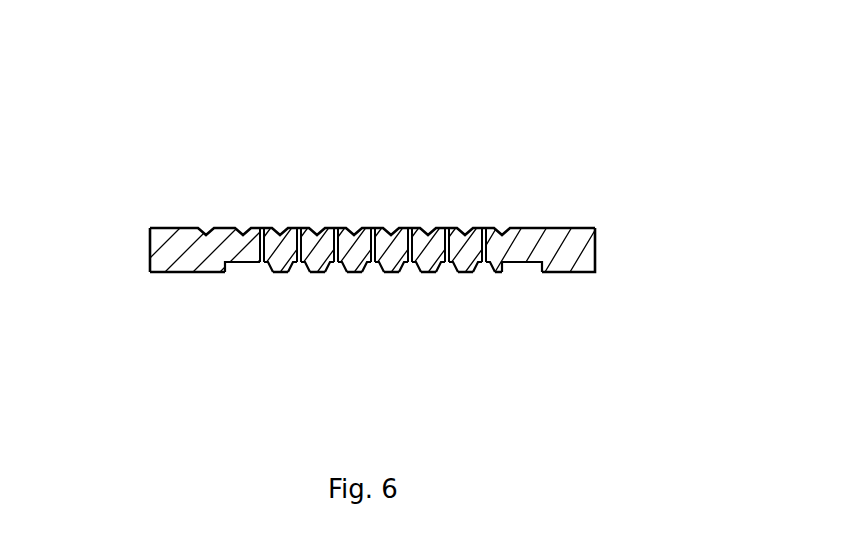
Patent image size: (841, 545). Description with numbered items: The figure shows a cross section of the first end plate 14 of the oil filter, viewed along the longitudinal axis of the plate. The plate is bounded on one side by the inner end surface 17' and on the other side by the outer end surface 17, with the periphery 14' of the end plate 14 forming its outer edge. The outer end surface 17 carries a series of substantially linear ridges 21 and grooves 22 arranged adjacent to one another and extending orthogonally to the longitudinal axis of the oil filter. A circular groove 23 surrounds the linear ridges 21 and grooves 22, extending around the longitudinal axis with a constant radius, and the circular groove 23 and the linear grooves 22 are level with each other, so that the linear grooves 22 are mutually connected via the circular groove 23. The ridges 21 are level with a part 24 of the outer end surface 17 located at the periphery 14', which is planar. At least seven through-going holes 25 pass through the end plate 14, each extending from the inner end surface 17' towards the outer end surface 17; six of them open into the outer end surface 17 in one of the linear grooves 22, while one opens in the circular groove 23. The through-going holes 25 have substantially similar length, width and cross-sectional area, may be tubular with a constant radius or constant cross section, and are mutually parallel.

The first end plate 14 is at (323, 152).
The periphery of the end plate 14' is at (108, 325).
The outer end surface 17 is at (430, 295).
The inner end surface 17' is at (409, 146).
The linear ridges 21 is at (355, 272).
The linear grooves 22 is at (443, 272).
The circular groove 23 is at (242, 272).
The part of the outer end surface 24 is at (568, 273).
The through-going holes 25 is at (482, 228).